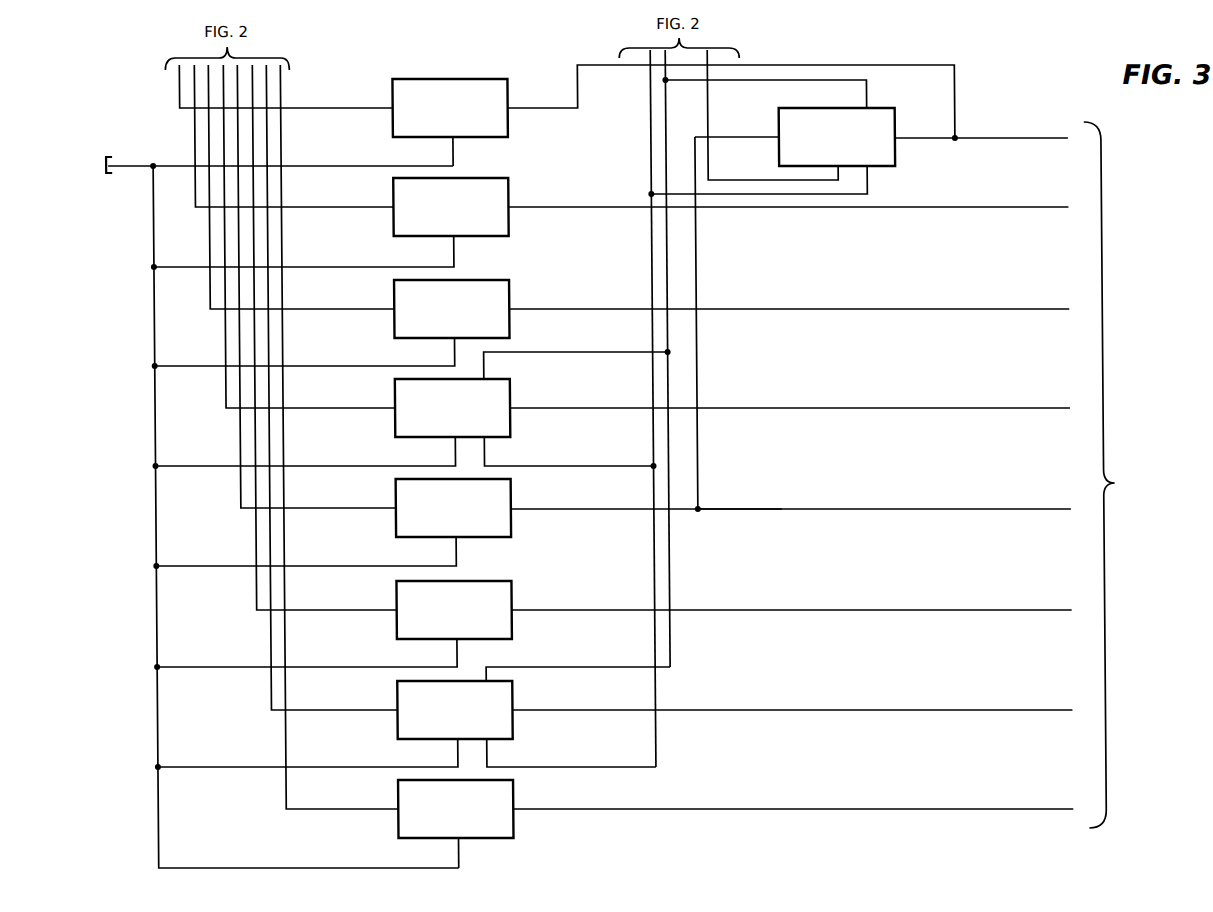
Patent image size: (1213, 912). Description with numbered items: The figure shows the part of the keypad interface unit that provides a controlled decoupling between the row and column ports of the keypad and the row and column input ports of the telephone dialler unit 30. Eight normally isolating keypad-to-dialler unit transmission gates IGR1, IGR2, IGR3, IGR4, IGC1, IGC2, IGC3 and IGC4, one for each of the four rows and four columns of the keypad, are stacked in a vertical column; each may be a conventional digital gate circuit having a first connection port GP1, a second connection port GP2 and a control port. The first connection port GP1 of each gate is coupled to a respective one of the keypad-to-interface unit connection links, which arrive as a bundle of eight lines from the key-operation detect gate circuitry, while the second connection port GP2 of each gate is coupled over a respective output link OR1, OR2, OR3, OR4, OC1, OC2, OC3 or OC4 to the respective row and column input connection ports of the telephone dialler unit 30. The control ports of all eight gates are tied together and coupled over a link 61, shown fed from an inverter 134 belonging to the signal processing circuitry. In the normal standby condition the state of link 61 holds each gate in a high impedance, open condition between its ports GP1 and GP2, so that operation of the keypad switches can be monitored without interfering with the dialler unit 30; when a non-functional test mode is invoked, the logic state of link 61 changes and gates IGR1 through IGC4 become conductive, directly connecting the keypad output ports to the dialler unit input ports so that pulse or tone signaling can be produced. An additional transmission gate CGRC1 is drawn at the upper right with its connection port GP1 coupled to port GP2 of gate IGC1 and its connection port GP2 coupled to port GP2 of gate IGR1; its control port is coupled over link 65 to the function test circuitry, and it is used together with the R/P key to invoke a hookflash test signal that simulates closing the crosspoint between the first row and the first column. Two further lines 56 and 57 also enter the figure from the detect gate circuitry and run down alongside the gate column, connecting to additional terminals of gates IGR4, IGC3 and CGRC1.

The link 61 is at (130, 167).
The inverter 134 is at (60, 163).
The supply line V- 56 is at (651, 153).
The supply line V+ 57 is at (668, 126).
The link 65 is at (710, 112).
The telephone dialler unit 30 is at (1147, 475).
The keypad-to-dialler unit transmission gate IGR1 is at (430, 79).
The keypad-to-dialler unit transmission gate IGR2 is at (401, 194).
The keypad-to-dialler unit transmission gate IGR3 is at (401, 292).
The keypad-to-dialler unit transmission gate IGR4 is at (398, 396).
The keypad-to-dialler unit transmission gate IGC1 is at (401, 496).
The keypad-to-dialler unit transmission gate IGC2 is at (401, 597).
The keypad-to-dialler unit transmission gate IGC3 is at (401, 697).
The keypad-to-dialler unit transmission gate IGC4 is at (401, 797).
The additional transmission gate CGRC1 is at (889, 167).
The first connection port GP1 is at (394, 109).
The second connection port GP2 is at (510, 106).
The output link OR1 is at (981, 128).
The output link OR2 is at (788, 197).
The output link OR3 is at (789, 299).
The output link OR4 is at (790, 398).
The output link OC1 is at (791, 499).
The output link OC2 is at (792, 600).
The output link OC3 is at (792, 700).
The output link OC4 is at (793, 799).